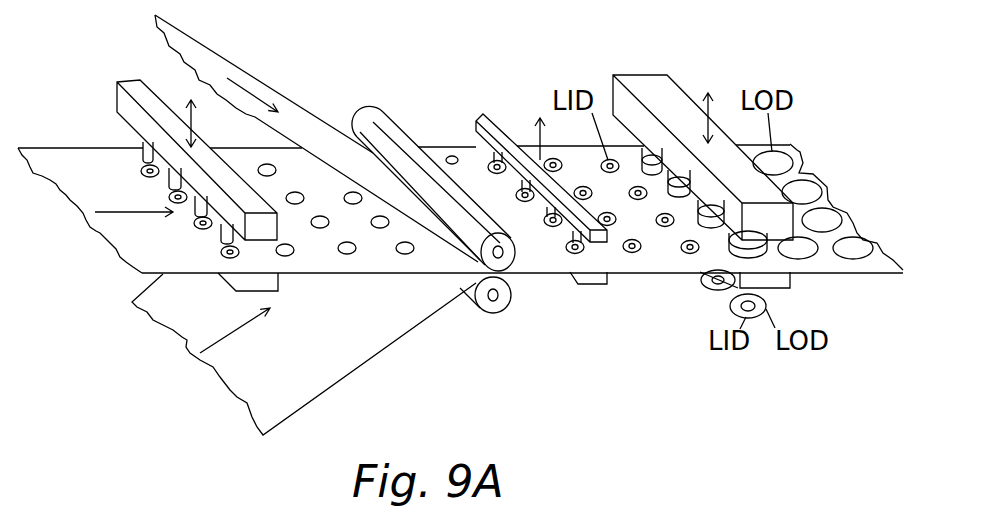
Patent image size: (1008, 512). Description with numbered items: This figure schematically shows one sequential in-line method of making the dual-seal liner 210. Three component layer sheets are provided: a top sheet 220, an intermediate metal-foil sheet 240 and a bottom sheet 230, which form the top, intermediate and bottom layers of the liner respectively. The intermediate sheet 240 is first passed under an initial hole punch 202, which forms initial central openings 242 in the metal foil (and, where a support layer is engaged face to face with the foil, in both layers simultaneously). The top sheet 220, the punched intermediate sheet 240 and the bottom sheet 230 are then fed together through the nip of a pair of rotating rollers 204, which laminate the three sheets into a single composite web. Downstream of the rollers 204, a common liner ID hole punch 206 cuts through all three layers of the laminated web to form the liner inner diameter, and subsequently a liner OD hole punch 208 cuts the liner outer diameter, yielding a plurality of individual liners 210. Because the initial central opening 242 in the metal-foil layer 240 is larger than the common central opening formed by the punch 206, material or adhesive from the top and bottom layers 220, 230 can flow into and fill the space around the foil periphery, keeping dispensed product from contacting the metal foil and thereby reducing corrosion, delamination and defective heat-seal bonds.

The initial hole punch 202 is at (128, 82).
The pair of rotating rollers 204 is at (512, 306).
The liner ID hole punch 206 is at (482, 113).
The liner OD hole punch 208 is at (649, 78).
The dual-seal liner 210 is at (447, 152).
The top layer sheet 220 is at (292, 104).
The bottom layer sheet 230 is at (296, 410).
The intermediate sheet 240 is at (90, 233).
The initial central opening 242 is at (168, 199).